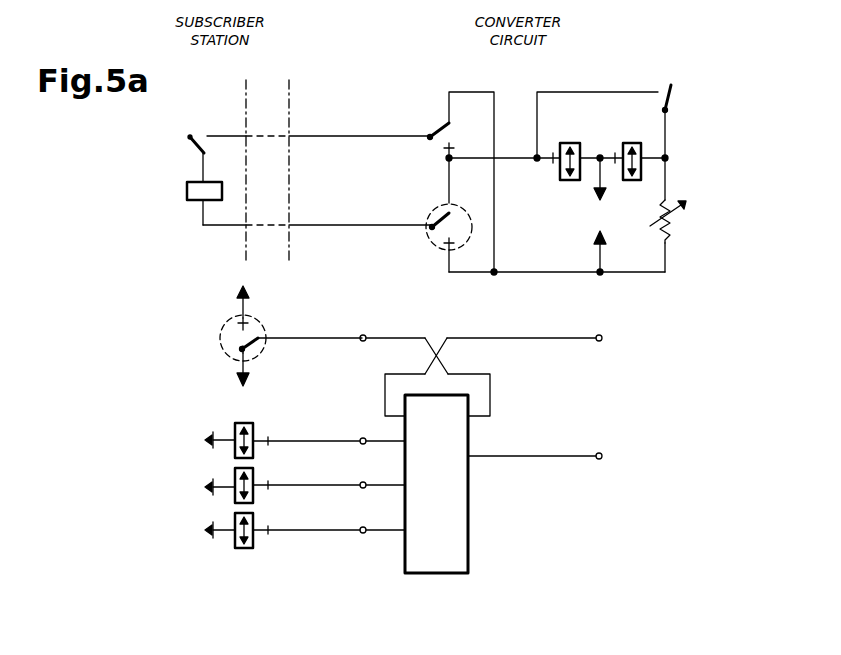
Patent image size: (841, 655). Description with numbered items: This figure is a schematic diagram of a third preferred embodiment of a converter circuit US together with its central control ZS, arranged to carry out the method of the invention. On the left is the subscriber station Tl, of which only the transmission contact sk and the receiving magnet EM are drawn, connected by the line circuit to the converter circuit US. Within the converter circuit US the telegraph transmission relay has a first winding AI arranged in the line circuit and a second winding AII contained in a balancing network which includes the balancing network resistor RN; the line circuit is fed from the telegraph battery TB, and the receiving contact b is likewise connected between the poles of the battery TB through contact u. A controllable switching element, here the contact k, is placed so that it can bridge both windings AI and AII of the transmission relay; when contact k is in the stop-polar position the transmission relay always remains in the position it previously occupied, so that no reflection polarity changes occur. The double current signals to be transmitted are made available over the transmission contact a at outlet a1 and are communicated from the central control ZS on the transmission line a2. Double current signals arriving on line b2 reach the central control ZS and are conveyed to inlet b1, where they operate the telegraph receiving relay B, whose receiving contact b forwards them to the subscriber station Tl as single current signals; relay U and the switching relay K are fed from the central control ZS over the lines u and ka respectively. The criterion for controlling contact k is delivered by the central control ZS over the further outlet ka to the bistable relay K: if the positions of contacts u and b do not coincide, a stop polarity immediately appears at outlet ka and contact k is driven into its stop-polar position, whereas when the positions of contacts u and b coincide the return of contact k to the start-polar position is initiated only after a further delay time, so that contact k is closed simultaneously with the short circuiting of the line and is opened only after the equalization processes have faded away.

The subscriber station Tl is at (243, 161).
The transmission contact sk is at (296, 154).
The receiving magnet EM is at (196, 200).
The converter circuit US is at (557, 169).
The contact u is at (406, 293).
The receiving contact b is at (449, 238).
The first winding of telegraph transmission relay AI is at (578, 148).
The second winding of telegraph transmission relay AII is at (593, 142).
The contact k is at (677, 142).
The telegraph battery TB is at (443, 277).
The balancing network resistor RN is at (676, 236).
The transmission contact of transmission relay a is at (291, 338).
The outlet a1 is at (399, 362).
The transmission line a2 is at (539, 371).
The inlet b1 is at (329, 428).
The line b2 is at (549, 457).
The control outlet ka is at (329, 517).
The telegraph receiving relay B is at (175, 410).
The relay U is at (183, 475).
The bistable relay K is at (202, 565).
The central control ZS is at (485, 542).